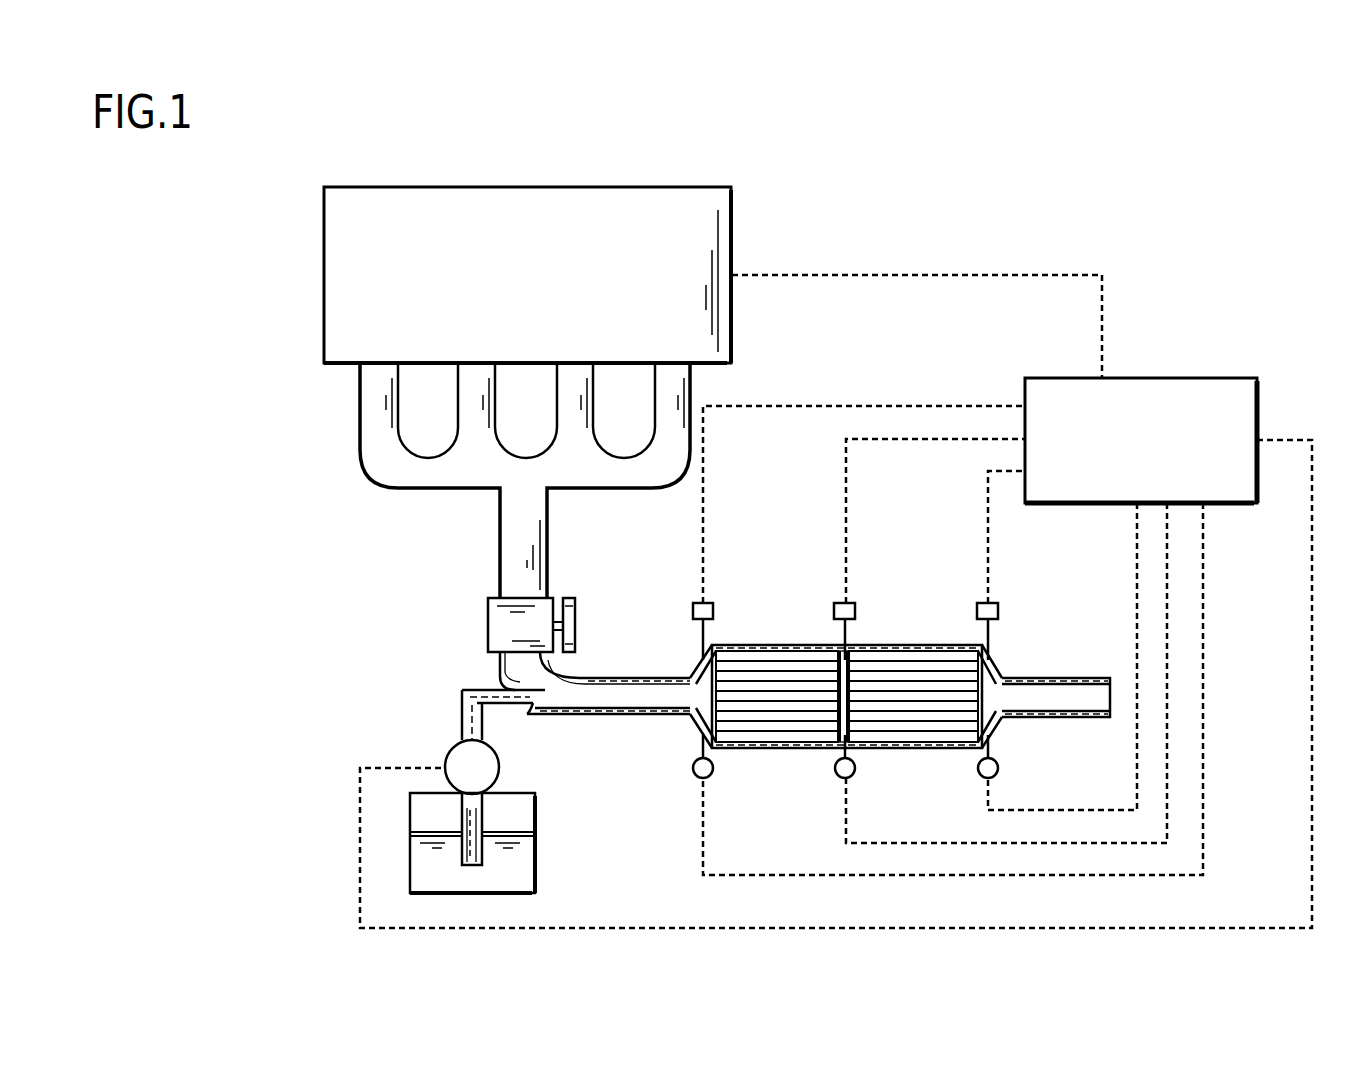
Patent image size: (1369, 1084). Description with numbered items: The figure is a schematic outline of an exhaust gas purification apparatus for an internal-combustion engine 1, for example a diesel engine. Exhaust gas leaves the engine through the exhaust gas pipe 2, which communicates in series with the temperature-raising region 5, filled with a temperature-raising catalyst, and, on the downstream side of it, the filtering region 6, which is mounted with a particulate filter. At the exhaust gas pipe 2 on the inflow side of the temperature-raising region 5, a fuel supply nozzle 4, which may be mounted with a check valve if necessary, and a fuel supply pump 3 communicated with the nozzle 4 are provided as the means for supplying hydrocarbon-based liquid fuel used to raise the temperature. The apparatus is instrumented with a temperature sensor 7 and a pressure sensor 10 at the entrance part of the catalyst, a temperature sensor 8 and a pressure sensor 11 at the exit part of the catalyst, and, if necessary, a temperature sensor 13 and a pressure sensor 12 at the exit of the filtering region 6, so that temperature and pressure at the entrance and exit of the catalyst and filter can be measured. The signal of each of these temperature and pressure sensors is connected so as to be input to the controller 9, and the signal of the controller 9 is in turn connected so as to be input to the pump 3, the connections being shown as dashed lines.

The internal-combustion engine 1 is at (672, 186).
The exhaust gas pipe 2 is at (612, 682).
The fuel supply pump 3 is at (452, 746).
The fuel supply nozzle 4 is at (527, 712).
The temperature-raising region 5 is at (780, 656).
The filtering region 6 is at (922, 656).
The temperature sensor 7 is at (693, 770).
The temperature sensor 8 is at (835, 770).
The controller 9 is at (1198, 378).
The pressure sensor 10 is at (712, 603).
The pressure sensor 11 is at (855, 603).
The pressure sensor 12 is at (998, 603).
The temperature sensor 13 is at (978, 770).